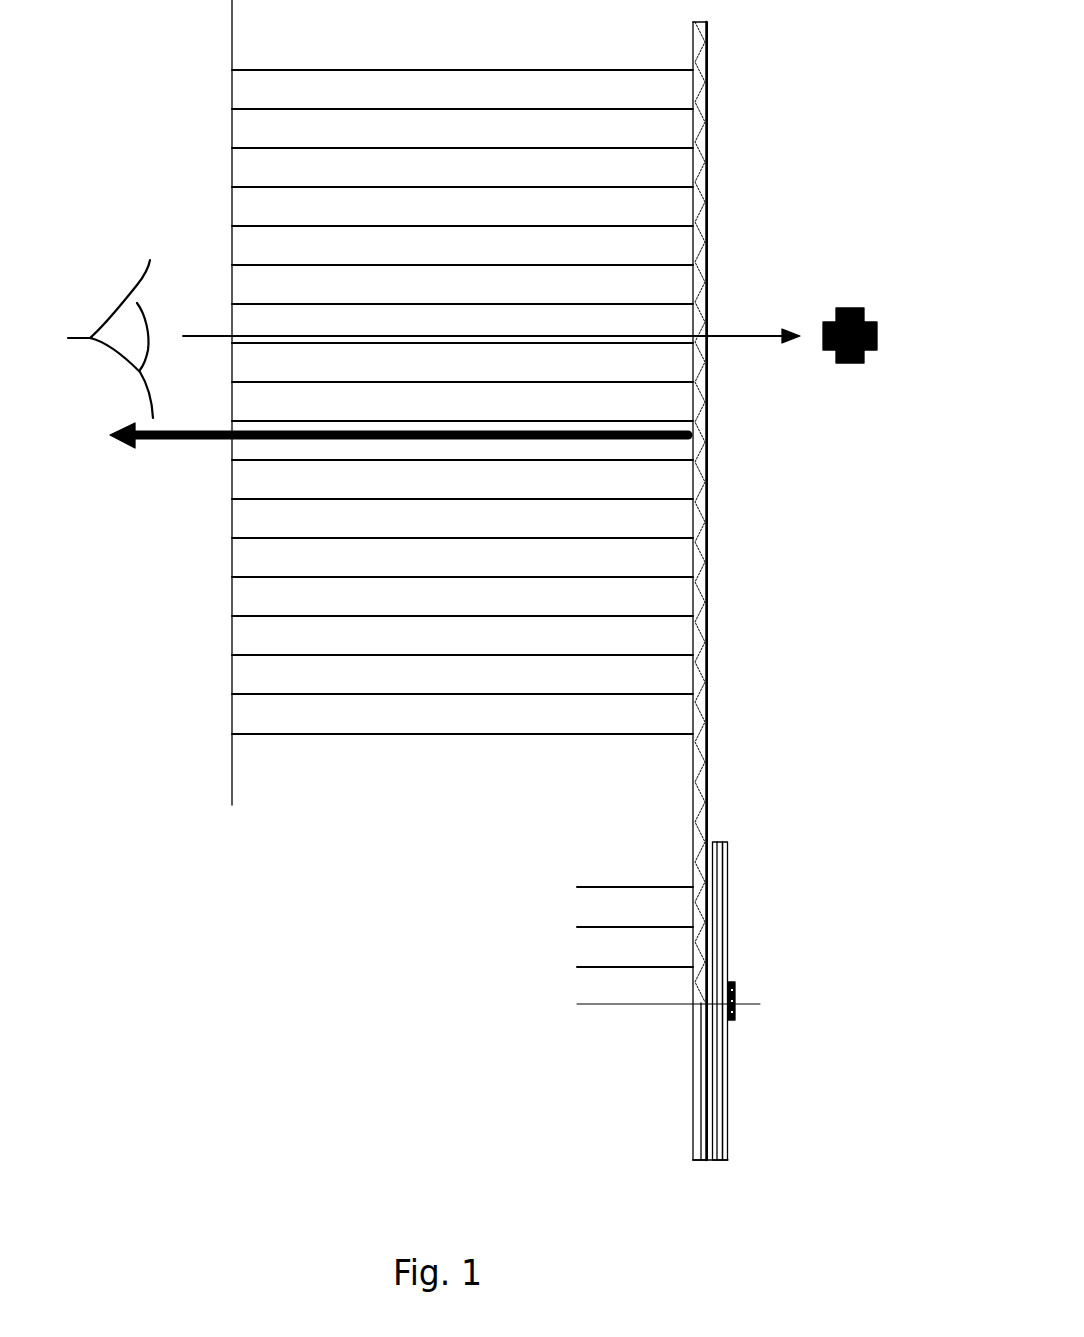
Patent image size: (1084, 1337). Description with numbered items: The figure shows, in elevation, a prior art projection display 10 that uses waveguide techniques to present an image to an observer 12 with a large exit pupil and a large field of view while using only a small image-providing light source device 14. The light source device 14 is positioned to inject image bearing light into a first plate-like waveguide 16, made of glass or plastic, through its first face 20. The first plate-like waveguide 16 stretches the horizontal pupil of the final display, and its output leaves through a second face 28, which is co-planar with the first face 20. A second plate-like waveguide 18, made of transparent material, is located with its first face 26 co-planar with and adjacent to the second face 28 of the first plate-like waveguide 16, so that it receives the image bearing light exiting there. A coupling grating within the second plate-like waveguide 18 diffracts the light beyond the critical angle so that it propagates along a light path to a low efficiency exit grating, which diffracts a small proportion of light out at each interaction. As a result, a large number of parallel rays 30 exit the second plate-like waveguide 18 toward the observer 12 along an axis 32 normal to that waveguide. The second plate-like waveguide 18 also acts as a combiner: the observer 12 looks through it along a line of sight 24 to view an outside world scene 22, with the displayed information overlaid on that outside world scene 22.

The projection display 10 is at (855, 667).
The observer 12 is at (128, 332).
The image-providing light source device 14 is at (735, 1005).
The first plate-like waveguide 16 is at (722, 888).
The second plate-like waveguide 18 is at (703, 753).
The first face 20 is at (727, 938).
The outside world scene 22 is at (850, 308).
The line of sight 24 is at (748, 337).
The first face 26 is at (707, 833).
The second face 28 is at (713, 1140).
The parallel rays 30 is at (370, 733).
The axis 32 is at (188, 442).